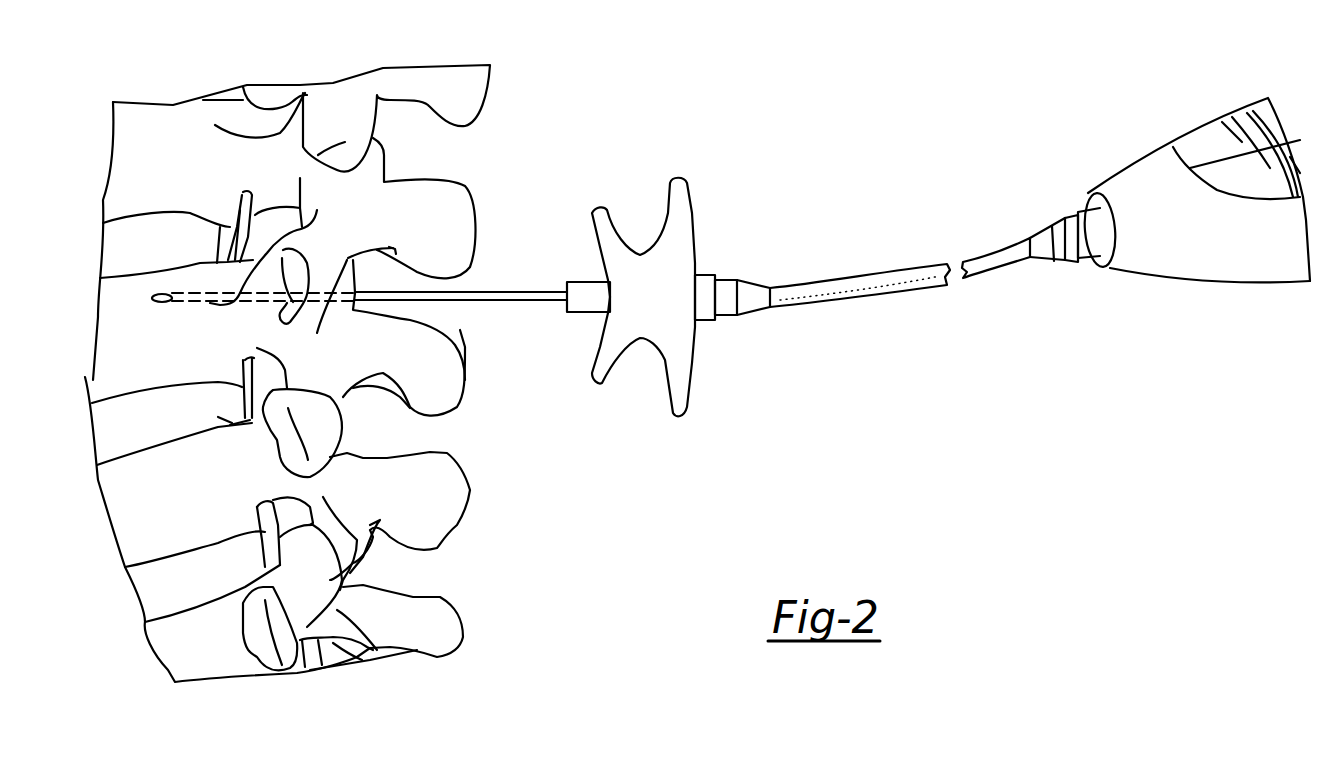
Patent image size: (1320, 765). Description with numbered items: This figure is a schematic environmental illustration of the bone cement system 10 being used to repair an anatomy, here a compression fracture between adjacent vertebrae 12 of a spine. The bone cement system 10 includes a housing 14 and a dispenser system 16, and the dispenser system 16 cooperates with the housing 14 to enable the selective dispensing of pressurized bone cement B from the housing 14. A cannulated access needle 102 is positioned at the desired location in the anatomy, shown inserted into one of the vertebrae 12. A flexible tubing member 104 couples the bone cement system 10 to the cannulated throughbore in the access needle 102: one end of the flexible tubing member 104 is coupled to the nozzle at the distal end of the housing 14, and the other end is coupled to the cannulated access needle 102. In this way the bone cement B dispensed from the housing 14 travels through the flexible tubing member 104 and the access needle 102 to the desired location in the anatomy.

The bone cement system 10 is at (1102, 128).
The vertebrae 12 is at (494, 205).
The housing 14 is at (1152, 282).
The dispenser system 16 is at (1199, 149).
The cannulated access needle 102 is at (677, 178).
The flexible tubing member 104 is at (873, 283).
The bone cement B is at (877, 295).